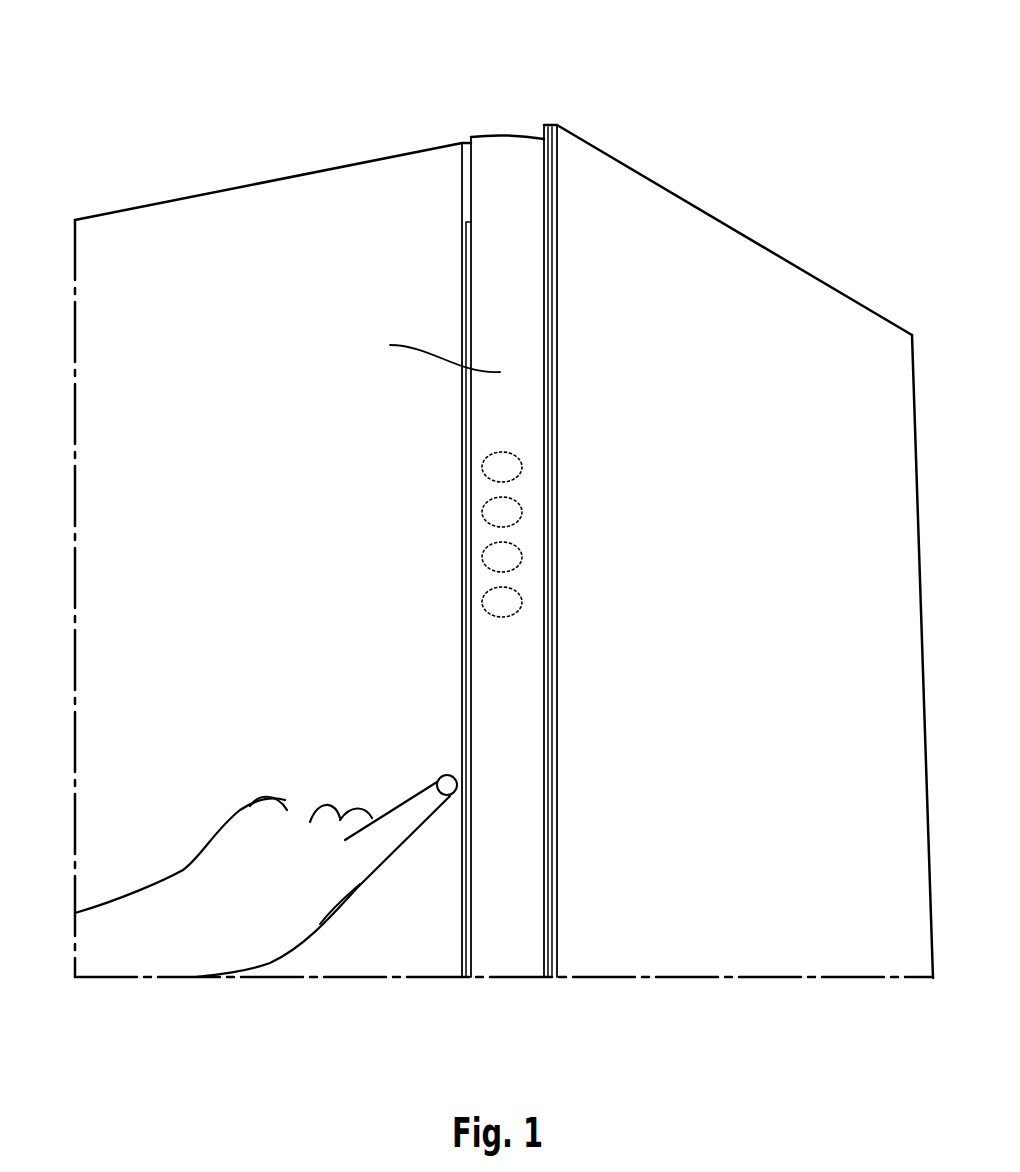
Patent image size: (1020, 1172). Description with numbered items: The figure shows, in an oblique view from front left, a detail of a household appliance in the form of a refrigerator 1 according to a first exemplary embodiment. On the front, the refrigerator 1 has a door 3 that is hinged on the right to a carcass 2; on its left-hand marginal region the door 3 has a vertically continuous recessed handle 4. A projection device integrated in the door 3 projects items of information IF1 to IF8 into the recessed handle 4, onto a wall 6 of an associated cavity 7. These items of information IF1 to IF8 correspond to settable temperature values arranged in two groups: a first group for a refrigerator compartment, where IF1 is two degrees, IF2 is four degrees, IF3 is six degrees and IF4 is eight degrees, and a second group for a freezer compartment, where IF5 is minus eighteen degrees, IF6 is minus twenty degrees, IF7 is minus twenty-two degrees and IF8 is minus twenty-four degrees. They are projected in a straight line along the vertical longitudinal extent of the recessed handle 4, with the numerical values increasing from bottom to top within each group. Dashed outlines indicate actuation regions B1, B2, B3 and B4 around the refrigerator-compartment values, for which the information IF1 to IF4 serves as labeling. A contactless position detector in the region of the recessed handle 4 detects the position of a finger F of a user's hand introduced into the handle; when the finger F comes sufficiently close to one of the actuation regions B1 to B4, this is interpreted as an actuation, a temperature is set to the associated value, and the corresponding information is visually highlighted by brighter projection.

The refrigerator 1 is at (148, 105).
The carcass 2 is at (306, 213).
The door 3 is at (662, 213).
The recessed handle 4 is at (514, 108).
The wall 6 is at (500, 372).
The cavity 7 is at (419, 353).
The actuation region B1 is at (523, 603).
The actuation region B2 is at (523, 558).
The actuation region B3 is at (523, 513).
The actuation region B4 is at (523, 468).
The information IF1 is at (482, 600).
The information IF2 is at (482, 555).
The information IF3 is at (482, 510).
The information IF4 is at (482, 465).
The information IF5 is at (525, 840).
The information IF6 is at (525, 795).
The information IF7 is at (525, 748).
The information IF8 is at (525, 702).
The finger F is at (412, 815).